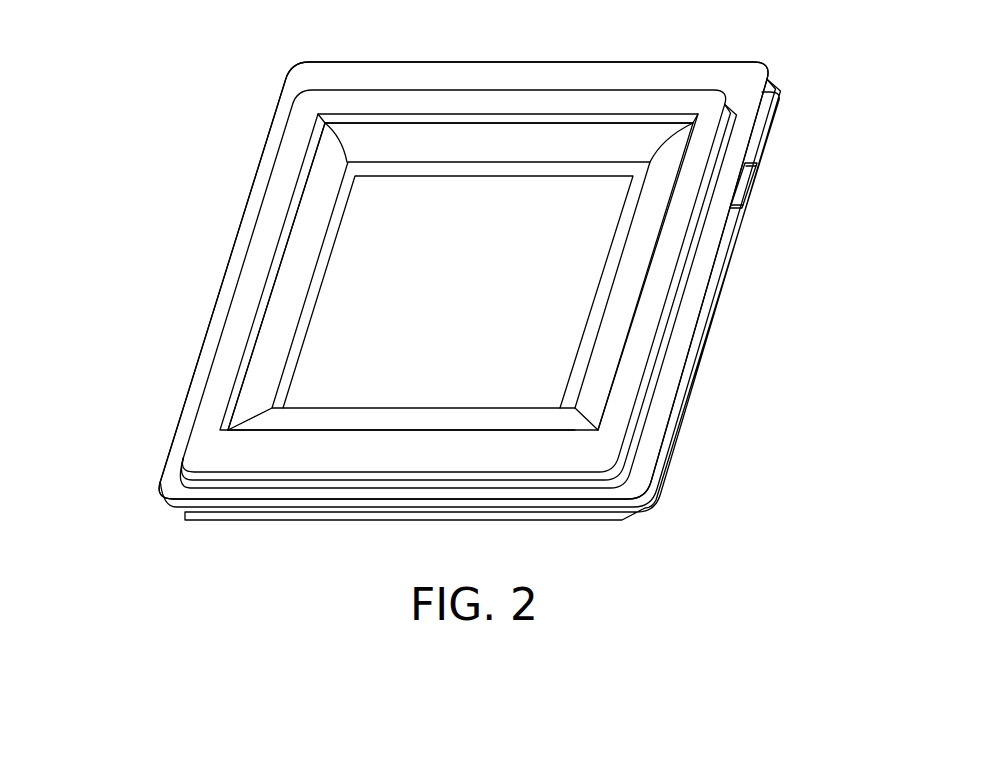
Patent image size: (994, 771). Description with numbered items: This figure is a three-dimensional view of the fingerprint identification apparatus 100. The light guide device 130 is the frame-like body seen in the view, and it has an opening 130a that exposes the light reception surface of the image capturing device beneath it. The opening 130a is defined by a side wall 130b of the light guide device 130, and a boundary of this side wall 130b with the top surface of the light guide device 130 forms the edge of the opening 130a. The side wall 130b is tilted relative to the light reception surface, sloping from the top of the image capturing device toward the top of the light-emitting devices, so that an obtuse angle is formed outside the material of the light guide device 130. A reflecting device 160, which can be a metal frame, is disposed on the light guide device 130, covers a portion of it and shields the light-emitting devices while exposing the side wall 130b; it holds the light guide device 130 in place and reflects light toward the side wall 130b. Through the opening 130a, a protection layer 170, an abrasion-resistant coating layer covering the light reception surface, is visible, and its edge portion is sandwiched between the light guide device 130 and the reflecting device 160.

The fingerprint identification apparatus 100 is at (831, 545).
The light guide device 130 is at (614, 326).
The opening 130a is at (358, 250).
The side wall 130b is at (511, 143).
The reflecting device 160 is at (700, 143).
The protection layer 170 is at (600, 222).